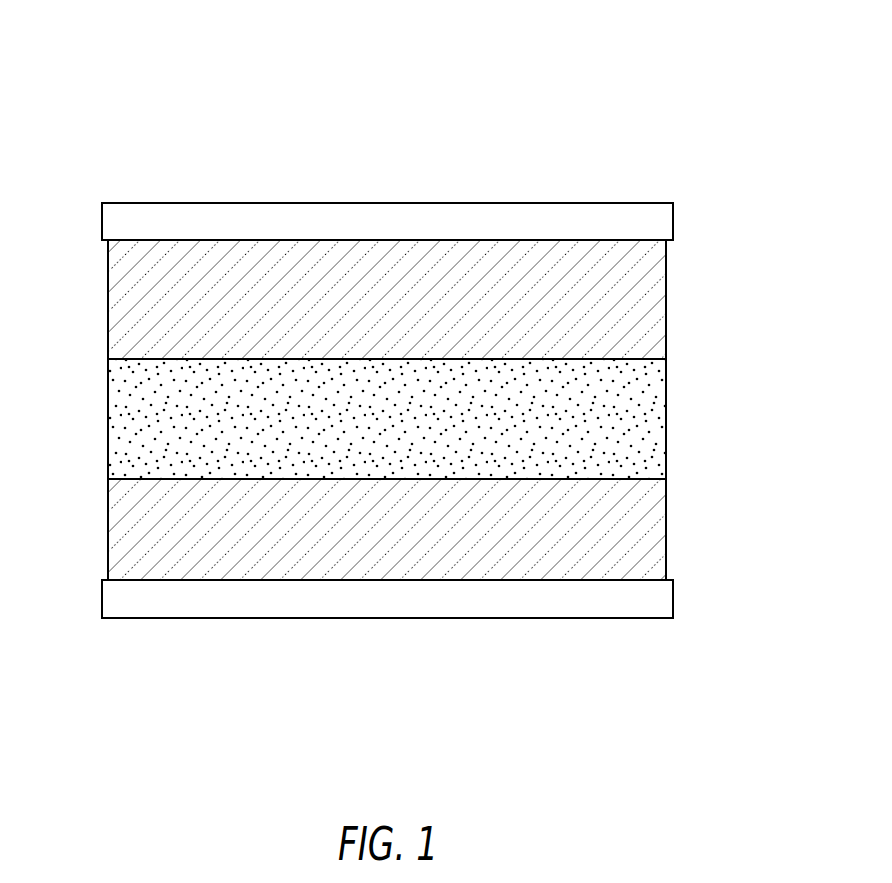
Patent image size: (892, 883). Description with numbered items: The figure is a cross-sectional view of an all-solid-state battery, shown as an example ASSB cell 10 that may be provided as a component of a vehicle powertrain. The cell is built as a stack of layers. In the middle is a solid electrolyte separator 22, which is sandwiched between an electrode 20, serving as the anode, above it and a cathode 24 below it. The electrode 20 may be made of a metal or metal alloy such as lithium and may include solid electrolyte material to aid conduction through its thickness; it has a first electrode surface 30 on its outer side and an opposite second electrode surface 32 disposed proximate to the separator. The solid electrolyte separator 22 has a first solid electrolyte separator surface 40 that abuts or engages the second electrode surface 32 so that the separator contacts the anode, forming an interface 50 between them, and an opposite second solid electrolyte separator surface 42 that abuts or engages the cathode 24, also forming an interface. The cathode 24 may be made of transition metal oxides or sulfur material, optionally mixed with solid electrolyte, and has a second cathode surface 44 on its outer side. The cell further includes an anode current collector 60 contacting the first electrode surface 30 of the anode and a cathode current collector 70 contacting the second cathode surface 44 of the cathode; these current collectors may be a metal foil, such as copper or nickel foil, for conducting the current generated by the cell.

The ASSB cell 10 is at (60, 102).
The electrode 20 is at (630, 305).
The solid electrolyte separator 22 is at (630, 435).
The cathode 24 is at (630, 542).
The first electrode surface 30 is at (205, 240).
The second electrode surface 32 is at (137, 358).
The first solid electrolyte separator surface 40 is at (637, 360).
The second solid electrolyte separator surface 42 is at (637, 479).
The second cathode surface 44 is at (494, 586).
The interface 50 is at (386, 354).
The anode current collector 60 is at (528, 221).
The cathode current collector 70 is at (232, 597).